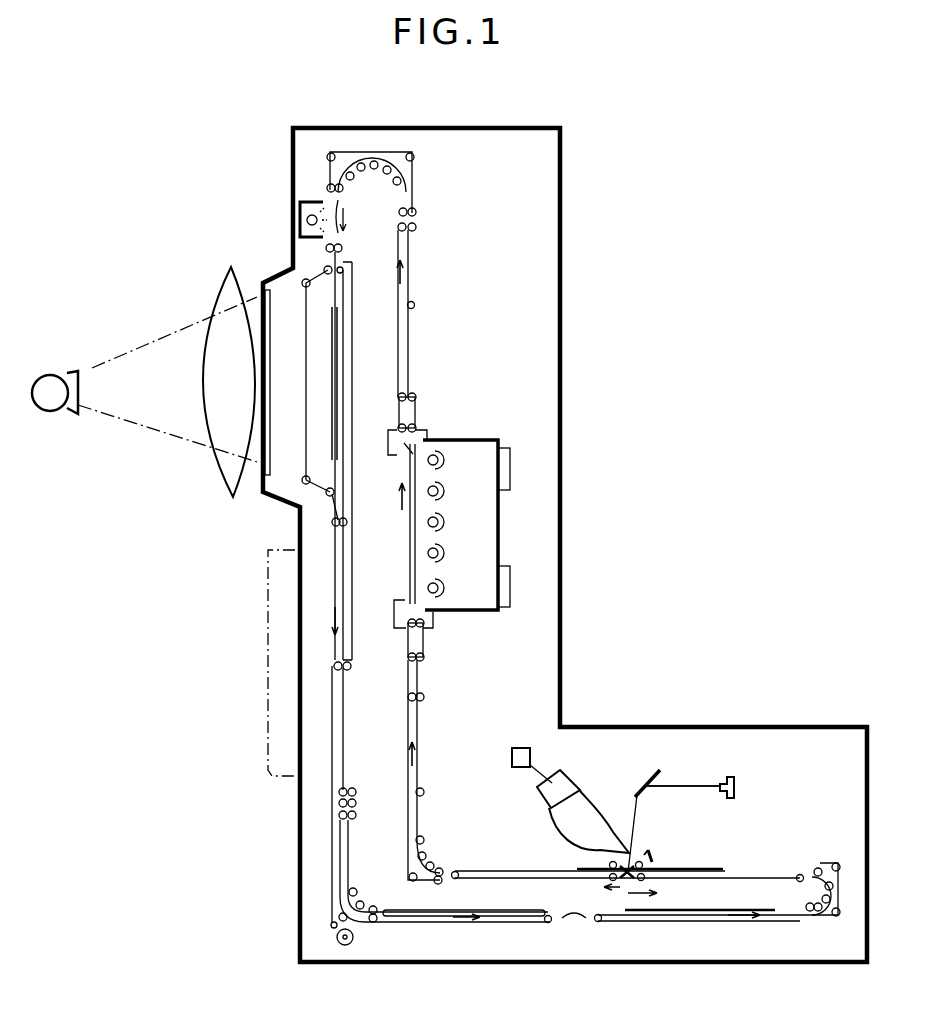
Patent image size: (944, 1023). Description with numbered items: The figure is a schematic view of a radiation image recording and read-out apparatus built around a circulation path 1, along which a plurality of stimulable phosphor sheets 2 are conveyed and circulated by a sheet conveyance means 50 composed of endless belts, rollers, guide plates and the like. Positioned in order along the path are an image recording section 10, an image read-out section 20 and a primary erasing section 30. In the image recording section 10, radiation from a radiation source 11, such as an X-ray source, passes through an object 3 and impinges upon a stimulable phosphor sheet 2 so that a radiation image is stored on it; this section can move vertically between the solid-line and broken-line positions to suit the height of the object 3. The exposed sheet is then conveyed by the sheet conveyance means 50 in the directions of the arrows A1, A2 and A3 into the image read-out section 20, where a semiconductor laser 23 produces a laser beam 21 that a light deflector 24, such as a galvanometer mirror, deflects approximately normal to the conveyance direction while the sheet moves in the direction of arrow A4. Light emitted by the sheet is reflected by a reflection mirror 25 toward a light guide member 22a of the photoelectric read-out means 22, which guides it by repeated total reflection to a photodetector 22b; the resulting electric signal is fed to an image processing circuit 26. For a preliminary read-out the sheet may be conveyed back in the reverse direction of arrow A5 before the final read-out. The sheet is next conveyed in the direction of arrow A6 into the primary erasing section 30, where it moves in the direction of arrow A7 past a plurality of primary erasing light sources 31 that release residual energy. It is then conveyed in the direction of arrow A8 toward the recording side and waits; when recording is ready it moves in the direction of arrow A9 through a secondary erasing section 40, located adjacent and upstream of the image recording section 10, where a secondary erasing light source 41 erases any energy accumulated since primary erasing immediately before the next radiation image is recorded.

The circulation path 1 is at (428, 250).
The stimulable phosphor sheet 2 is at (332, 378).
The object 3 is at (233, 290).
The image recording section 10 is at (175, 320).
The radiation source 11 is at (56, 375).
The image read-out section 20 is at (722, 748).
The laser beam 21 is at (683, 786).
The photoelectric read-out means 22 is at (558, 808).
The light guide member 22a is at (578, 828).
The photodetector 22b is at (572, 780).
The semiconductor laser 23 is at (738, 783).
The light deflector 24 is at (638, 792).
The reflection mirror 25 is at (653, 856).
The image processing circuit 26 is at (525, 748).
The primary erasing section 30 is at (528, 541).
The primary erasing light source 31 is at (442, 490).
The secondary erasing section 40 is at (320, 188).
The secondary erasing light source 41 is at (300, 219).
The sheet conveyance means 50 is at (389, 160).
The conveyance direction arrow A1 is at (330, 615).
The conveyance direction arrow A2 is at (468, 922).
The conveyance direction arrow A3 is at (746, 920).
The conveyance direction arrow A4 is at (618, 892).
The reverse conveyance direction arrow A5 is at (641, 900).
The conveyance direction arrow A6 is at (422, 750).
The conveyance direction arrow A7 is at (398, 495).
The conveyance direction arrow A8 is at (405, 277).
The conveyance direction arrow A9 is at (347, 218).